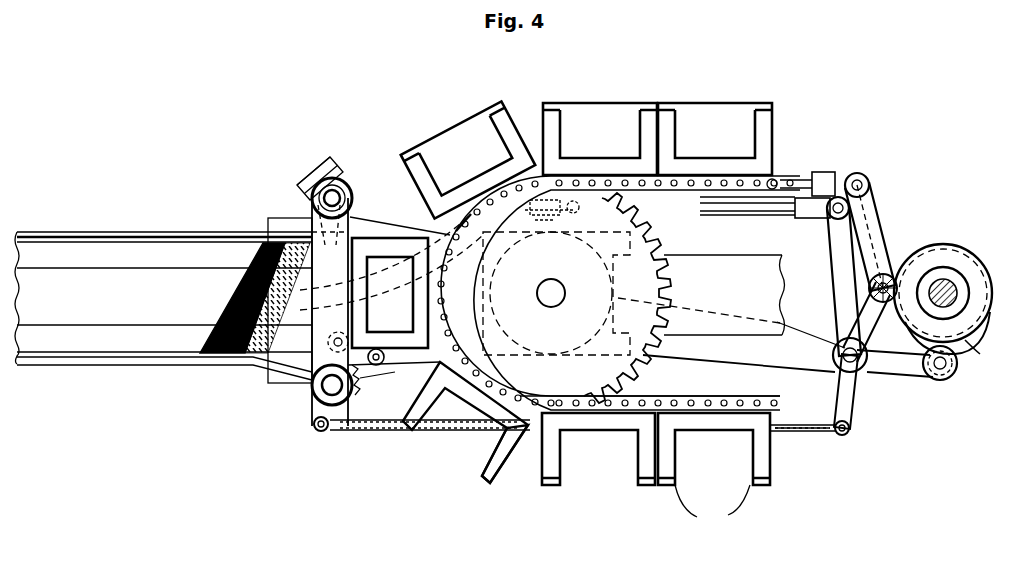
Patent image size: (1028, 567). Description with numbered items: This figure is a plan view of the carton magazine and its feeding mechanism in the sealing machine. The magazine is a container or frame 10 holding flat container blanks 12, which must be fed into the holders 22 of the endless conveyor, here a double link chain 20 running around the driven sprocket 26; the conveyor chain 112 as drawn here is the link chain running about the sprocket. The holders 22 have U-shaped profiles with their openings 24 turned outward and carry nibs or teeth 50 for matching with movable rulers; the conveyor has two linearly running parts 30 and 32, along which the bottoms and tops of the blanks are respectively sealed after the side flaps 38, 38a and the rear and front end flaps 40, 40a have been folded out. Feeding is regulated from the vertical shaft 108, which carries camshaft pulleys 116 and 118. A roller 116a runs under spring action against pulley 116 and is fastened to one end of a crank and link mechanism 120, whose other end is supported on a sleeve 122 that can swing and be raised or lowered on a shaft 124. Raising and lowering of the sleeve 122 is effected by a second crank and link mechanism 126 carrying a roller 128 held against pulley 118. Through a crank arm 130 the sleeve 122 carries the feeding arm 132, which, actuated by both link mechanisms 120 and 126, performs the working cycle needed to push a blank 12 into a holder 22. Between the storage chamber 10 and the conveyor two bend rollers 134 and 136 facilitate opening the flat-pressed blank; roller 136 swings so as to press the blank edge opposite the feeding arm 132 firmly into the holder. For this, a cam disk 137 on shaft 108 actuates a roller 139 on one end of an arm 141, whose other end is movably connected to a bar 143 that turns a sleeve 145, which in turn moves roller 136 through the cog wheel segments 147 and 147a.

The frame 10 is at (138, 247).
The flat container blanks 12 is at (203, 347).
The double link chain 20 is at (686, 404).
The holders 22 is at (485, 475).
The openings 24 is at (614, 454).
The sprocket 26 is at (660, 246).
The linearly running part 30 is at (771, 182).
The linearly running part 32 is at (780, 432).
The side flap 38 is at (449, 142).
The side flap 38a is at (498, 148).
The rear end flap 40 is at (565, 130).
The front end flap 40a is at (652, 130).
The nibs or teeth 50 is at (714, 471).
The vertical shaft 108 is at (948, 286).
The conveyor chain 112 is at (585, 370).
The camshaft pulley 116 is at (975, 320).
The roller 116a is at (883, 339).
The camshaft pulley 118 is at (937, 264).
The crank and link mechanism 120 is at (870, 205).
The sleeve 122 is at (352, 196).
The shaft 124 is at (308, 182).
The crank and link mechanism 126 is at (560, 232).
The roller 128 is at (868, 290).
The crank arm 130 is at (336, 161).
The feeding arm 132 is at (380, 284).
The bend roller 134 is at (306, 230).
The bend roller 136 is at (328, 340).
The cam disk 137 is at (970, 342).
The roller 139 is at (948, 378).
The arm 141 is at (851, 394).
The bar 143 is at (465, 428).
The sleeve 145 is at (314, 414).
The cog wheel segment 147 is at (350, 430).
The cog wheel segment 147a is at (390, 370).